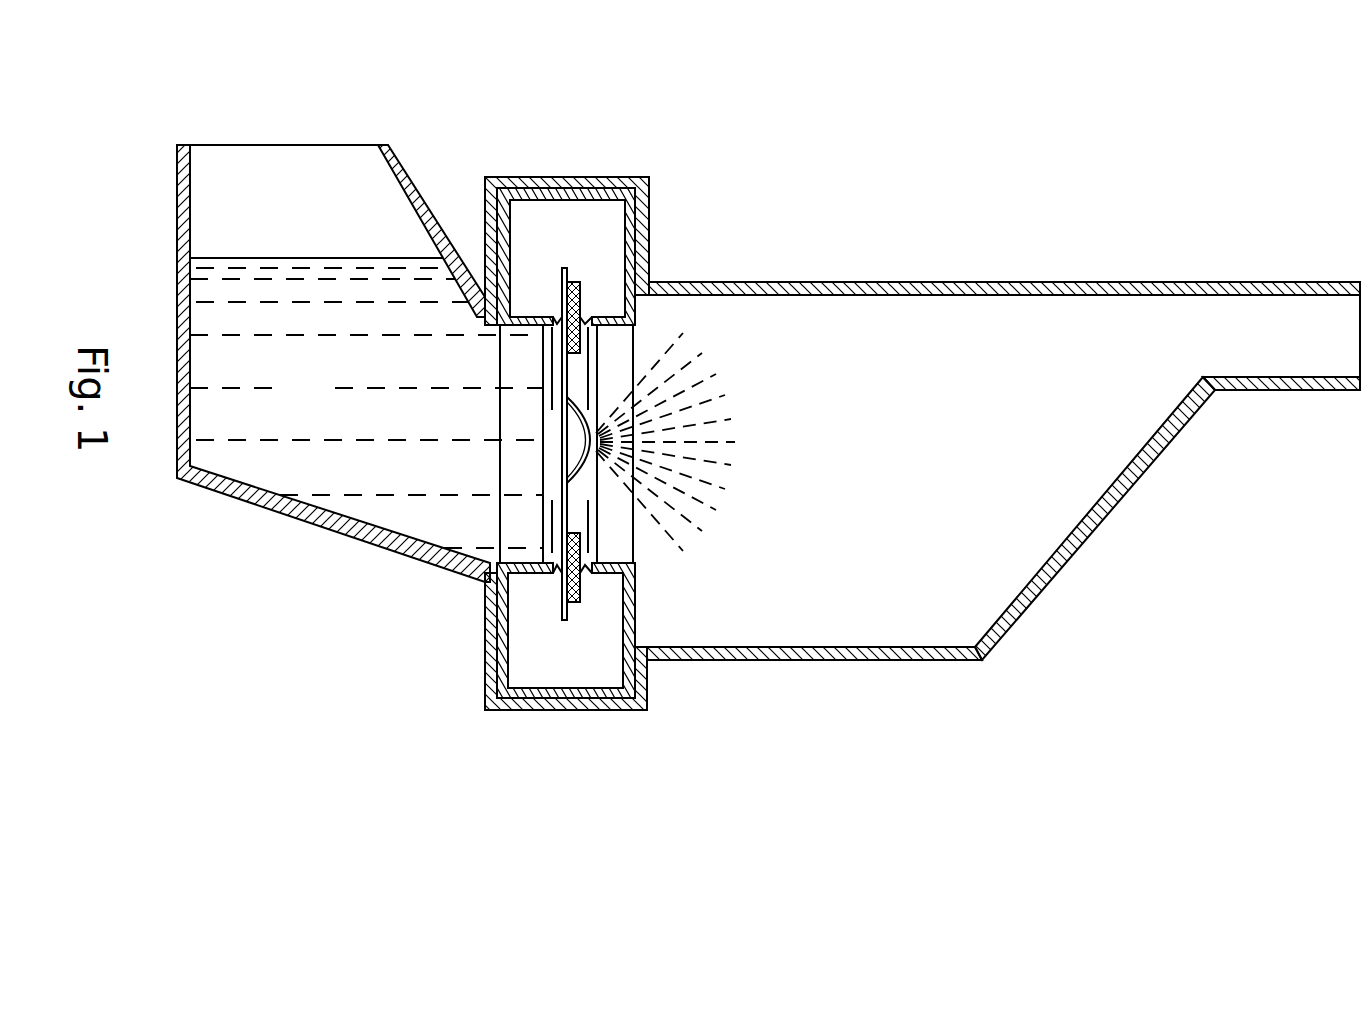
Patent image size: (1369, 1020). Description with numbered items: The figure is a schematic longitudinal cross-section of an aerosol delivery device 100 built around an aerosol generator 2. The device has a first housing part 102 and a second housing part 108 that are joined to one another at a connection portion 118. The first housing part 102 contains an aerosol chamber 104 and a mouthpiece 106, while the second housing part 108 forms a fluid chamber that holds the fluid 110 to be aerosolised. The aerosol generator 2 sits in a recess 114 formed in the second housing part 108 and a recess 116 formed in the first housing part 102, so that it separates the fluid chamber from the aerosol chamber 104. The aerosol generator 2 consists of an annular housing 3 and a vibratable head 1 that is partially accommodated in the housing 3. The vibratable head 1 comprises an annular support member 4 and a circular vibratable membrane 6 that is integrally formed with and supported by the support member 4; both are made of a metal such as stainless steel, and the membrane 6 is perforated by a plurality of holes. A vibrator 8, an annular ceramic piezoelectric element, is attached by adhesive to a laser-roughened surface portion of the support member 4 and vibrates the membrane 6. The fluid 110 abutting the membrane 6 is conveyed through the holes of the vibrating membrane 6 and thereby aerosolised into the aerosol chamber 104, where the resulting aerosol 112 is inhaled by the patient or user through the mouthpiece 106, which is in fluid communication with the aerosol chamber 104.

The vibratable head 1 is at (592, 287).
The aerosol generator 2 is at (580, 226).
The annular housing 3 is at (500, 708).
The annular support member 4 is at (565, 600).
The vibratable membrane 6 is at (582, 399).
The vibrator 8 is at (580, 601).
The aerosol delivery device 100 is at (840, 664).
The first housing part 102 is at (900, 284).
The aerosol chamber 104 is at (1040, 503).
The mouthpiece 106 is at (1281, 357).
The second housing part 108 is at (357, 520).
The fluid 110 is at (366, 403).
The aerosol 112 is at (683, 432).
The recess 114 is at (489, 177).
The recess 116 is at (653, 177).
The connection portion 118 is at (565, 712).